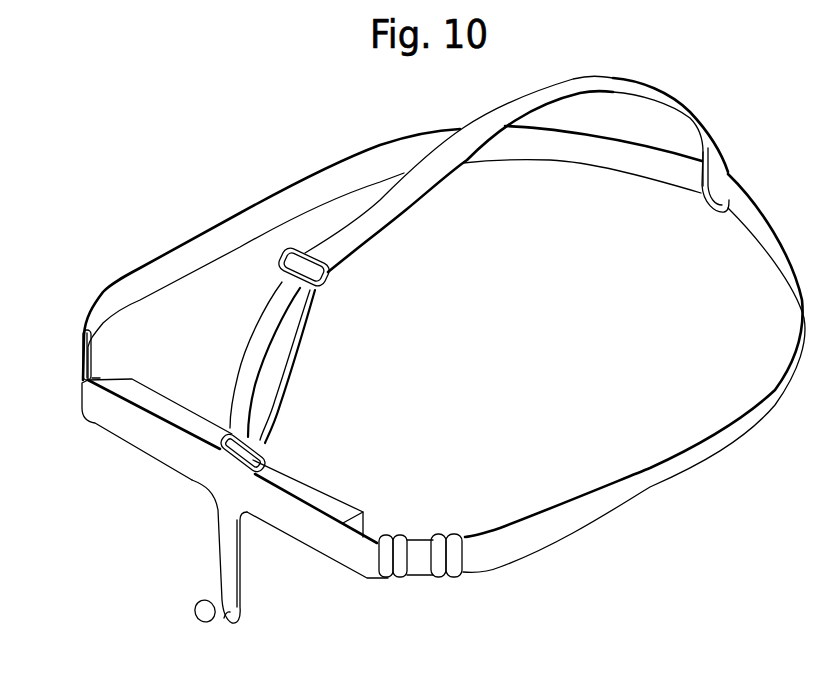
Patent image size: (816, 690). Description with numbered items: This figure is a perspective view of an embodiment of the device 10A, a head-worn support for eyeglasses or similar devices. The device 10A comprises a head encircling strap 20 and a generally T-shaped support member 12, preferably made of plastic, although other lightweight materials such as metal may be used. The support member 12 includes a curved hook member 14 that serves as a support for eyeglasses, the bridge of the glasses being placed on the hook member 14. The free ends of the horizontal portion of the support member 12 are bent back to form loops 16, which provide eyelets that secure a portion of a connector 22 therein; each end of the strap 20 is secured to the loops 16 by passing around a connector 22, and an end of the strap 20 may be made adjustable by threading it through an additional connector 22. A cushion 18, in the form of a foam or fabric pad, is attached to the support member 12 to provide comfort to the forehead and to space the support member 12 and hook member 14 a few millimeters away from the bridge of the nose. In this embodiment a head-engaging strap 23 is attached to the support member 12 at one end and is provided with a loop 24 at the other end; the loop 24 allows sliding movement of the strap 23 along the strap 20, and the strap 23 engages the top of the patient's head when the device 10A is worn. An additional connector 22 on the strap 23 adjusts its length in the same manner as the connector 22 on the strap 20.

The device 10A is at (137, 208).
The support member 12 is at (178, 452).
The hook member 14 is at (230, 622).
The loops 16 is at (91, 377).
The cushion 18 is at (310, 480).
The strap 20 is at (633, 483).
The connector 22 is at (83, 355).
The head-engaging strap 23 is at (395, 210).
The loop 24 is at (710, 197).